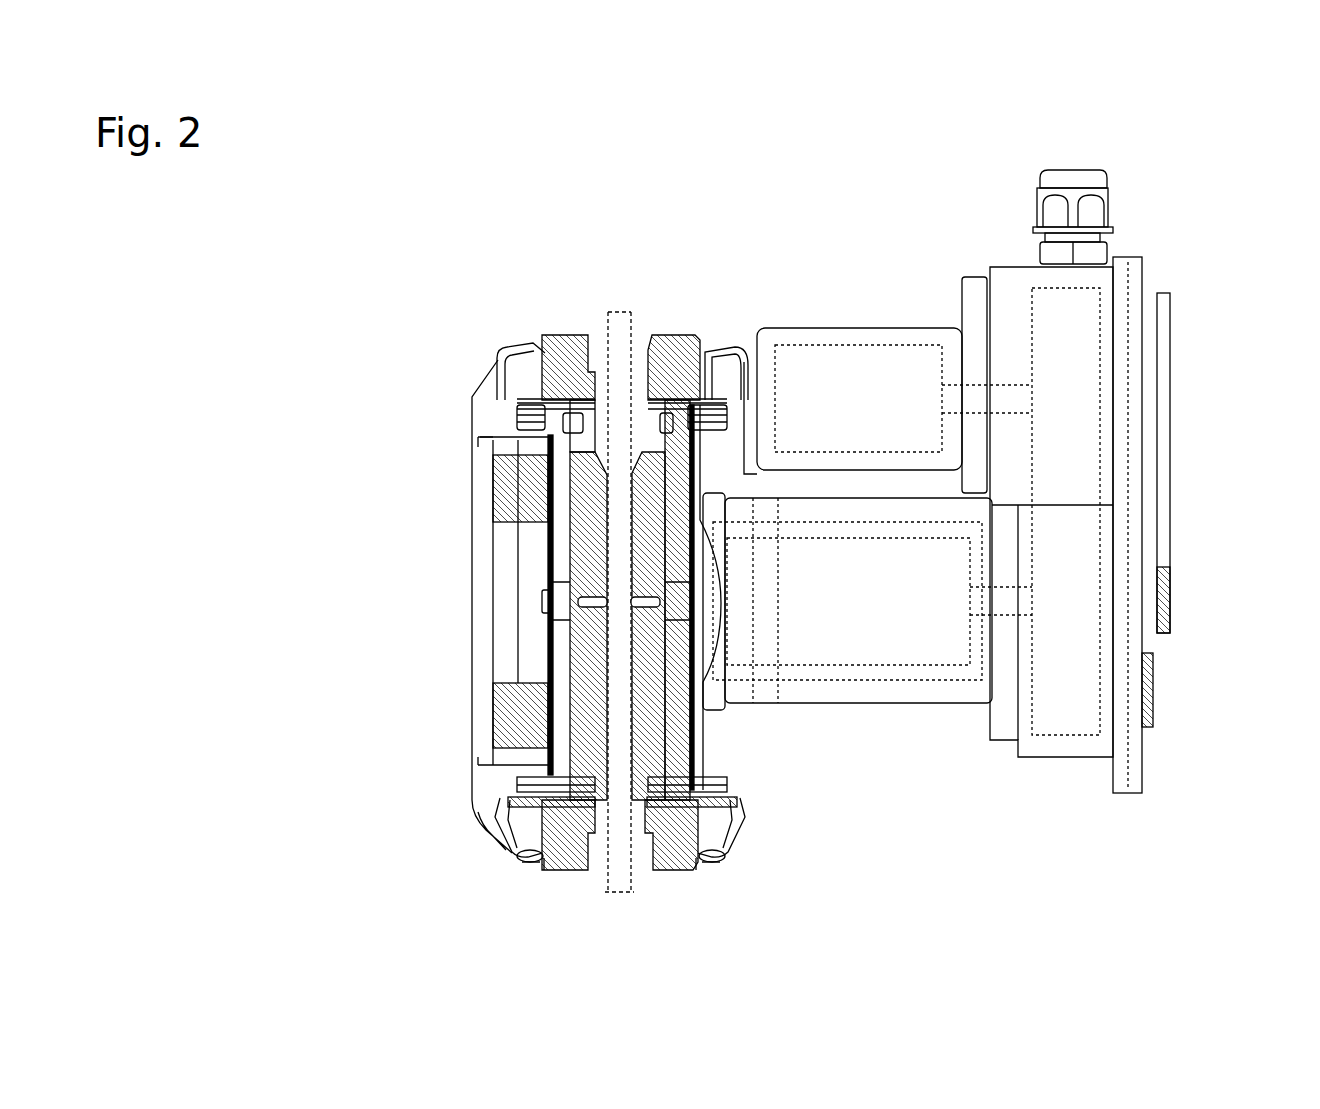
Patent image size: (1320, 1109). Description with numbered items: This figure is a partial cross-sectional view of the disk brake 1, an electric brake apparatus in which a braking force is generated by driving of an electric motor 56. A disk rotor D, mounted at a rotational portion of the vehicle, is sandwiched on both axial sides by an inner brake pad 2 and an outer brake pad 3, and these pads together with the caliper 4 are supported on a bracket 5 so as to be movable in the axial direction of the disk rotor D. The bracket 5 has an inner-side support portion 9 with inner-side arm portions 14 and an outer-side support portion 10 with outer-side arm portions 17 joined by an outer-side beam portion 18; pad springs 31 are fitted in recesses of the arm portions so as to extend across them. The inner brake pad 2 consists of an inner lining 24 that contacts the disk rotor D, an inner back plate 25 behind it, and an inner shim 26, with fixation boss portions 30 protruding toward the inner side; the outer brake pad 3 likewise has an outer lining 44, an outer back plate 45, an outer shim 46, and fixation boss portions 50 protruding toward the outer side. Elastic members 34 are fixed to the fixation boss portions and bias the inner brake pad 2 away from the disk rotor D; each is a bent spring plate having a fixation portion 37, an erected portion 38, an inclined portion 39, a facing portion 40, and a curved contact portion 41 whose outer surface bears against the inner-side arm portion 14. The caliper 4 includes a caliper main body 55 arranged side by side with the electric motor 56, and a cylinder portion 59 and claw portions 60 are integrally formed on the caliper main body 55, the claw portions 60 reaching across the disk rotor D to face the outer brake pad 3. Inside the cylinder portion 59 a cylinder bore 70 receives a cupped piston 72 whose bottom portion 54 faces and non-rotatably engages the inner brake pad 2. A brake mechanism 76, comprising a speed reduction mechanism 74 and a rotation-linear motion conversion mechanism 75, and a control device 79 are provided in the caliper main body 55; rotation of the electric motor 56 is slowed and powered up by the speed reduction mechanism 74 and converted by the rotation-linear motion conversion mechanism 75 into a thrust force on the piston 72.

The disk brake 1 is at (1078, 468).
The inner brake pad 2 is at (715, 770).
The outer brake pad 3 is at (540, 567).
The caliper 4 is at (884, 250).
The bracket 5 is at (466, 848).
The inner-side support portion 9 is at (692, 320).
The outer-side support portion 10 is at (464, 638).
The inner-side arm portion 14 is at (672, 336).
The outer-side arm portion 17 is at (556, 336).
The outer-side beam portion 18 is at (480, 462).
The inner lining 24 is at (600, 343).
The inner back plate 25 is at (644, 445).
The inner shim 26 is at (716, 745).
The fixation boss portion 30 is at (715, 815).
The pad spring 31 is at (497, 423).
The elastic member 34 is at (483, 370).
The fixation portion 37 is at (530, 768).
The erected portion 38 is at (505, 818).
The inclined portion 39 is at (500, 850).
The facing portion 40 is at (528, 866).
The contact portion 41 is at (546, 866).
The outer lining 44 is at (520, 647).
The outer back plate 45 is at (490, 737).
The outer shim 46 is at (527, 630).
The fixation boss portion 50 is at (515, 792).
The bottom portion 54 is at (780, 500).
The caliper main body 55 is at (1062, 777).
The electric motor 56 is at (850, 360).
The cylinder portion 59 is at (935, 705).
The claw portion 60 is at (515, 497).
The cylinder bore 70 is at (885, 678).
The piston 72 is at (818, 680).
The speed reduction mechanism 74 is at (1090, 640).
The rotation-linear motion conversion mechanism 75 is at (905, 645).
The brake mechanism 76 is at (955, 650).
The control device 79 is at (1157, 405).
The disk rotor D is at (620, 308).